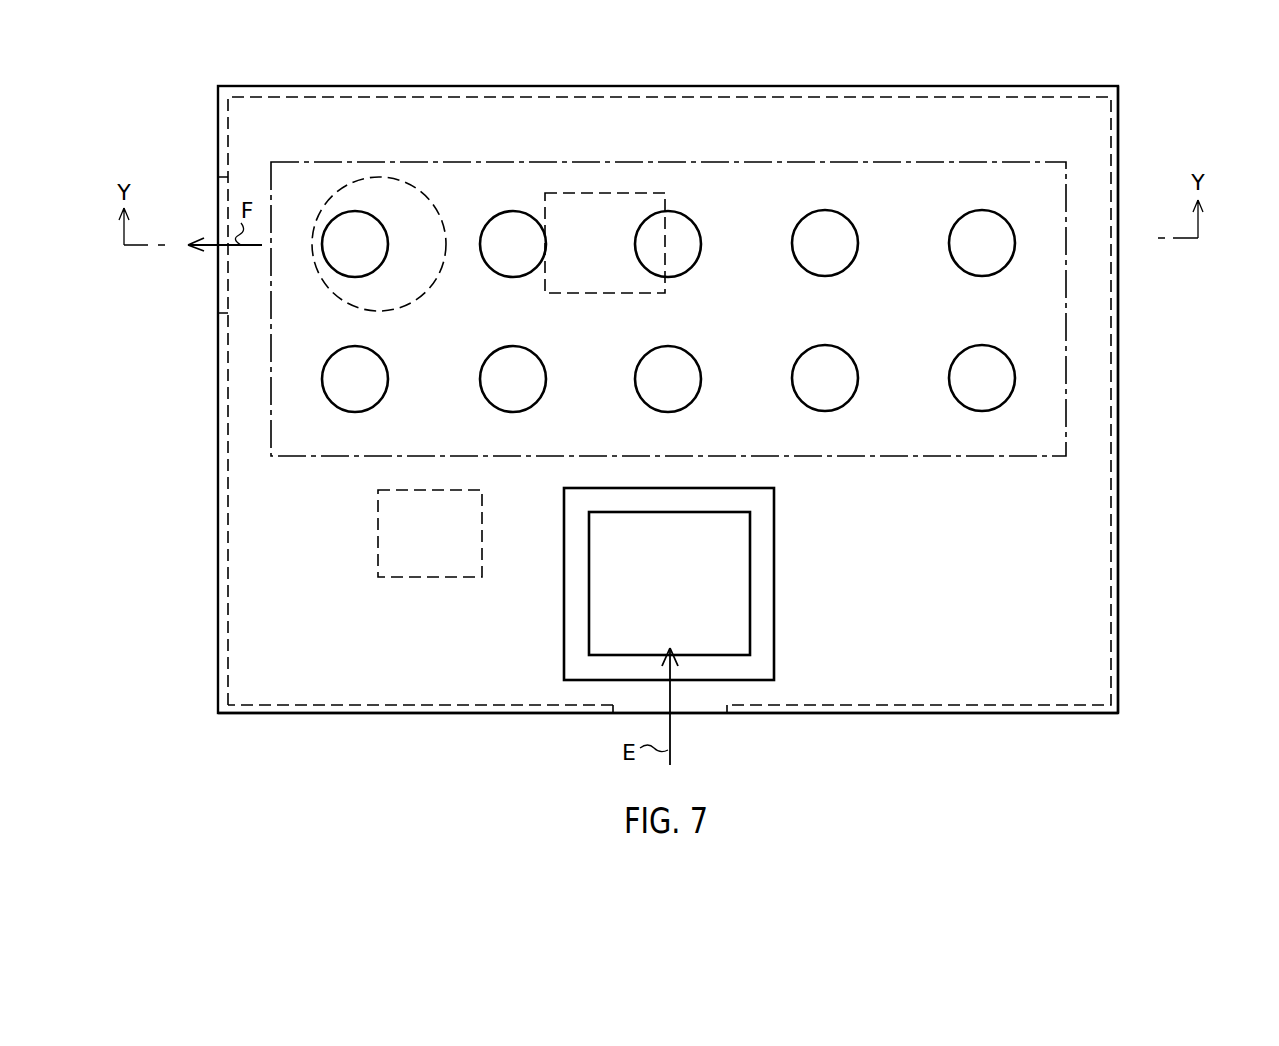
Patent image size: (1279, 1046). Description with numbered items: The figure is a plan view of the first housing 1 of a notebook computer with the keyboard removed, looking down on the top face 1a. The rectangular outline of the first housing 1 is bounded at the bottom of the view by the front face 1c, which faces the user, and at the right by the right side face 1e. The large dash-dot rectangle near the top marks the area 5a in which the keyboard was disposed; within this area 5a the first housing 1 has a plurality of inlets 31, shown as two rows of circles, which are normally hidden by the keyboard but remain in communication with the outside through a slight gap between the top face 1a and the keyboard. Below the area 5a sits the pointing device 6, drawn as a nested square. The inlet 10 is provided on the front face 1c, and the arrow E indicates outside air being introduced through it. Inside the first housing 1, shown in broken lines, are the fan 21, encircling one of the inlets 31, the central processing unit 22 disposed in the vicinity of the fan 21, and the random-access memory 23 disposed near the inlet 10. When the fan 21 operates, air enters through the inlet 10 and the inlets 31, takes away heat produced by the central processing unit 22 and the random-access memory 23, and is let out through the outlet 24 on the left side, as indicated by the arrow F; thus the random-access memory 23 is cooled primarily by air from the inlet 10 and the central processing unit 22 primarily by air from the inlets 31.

The first housing 1 is at (1118, 297).
The top face 1a is at (1068, 525).
The front face 1c is at (413, 716).
The right side face 1e is at (1122, 630).
The area for disposing the keyboard 5a is at (1066, 378).
The pointing device 6 is at (585, 681).
The inlet 10 is at (710, 708).
The fan 21 is at (414, 312).
The central processing unit 22 is at (604, 294).
The random-access memory 23 is at (430, 578).
The outlet 24 is at (222, 301).
The inlets 31 is at (985, 276).